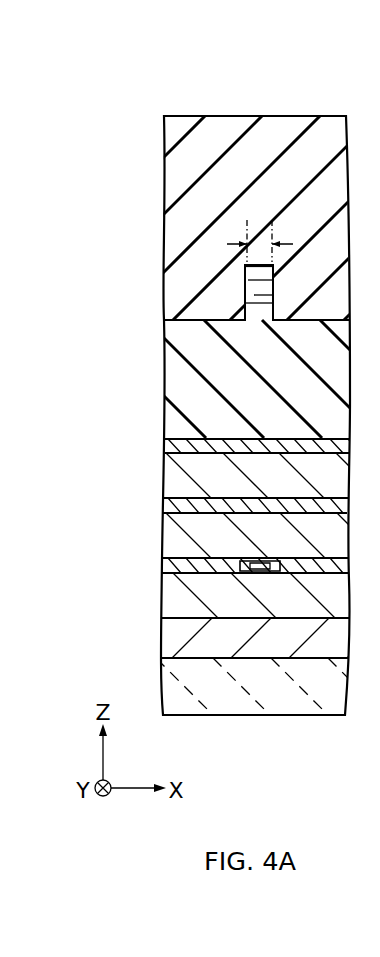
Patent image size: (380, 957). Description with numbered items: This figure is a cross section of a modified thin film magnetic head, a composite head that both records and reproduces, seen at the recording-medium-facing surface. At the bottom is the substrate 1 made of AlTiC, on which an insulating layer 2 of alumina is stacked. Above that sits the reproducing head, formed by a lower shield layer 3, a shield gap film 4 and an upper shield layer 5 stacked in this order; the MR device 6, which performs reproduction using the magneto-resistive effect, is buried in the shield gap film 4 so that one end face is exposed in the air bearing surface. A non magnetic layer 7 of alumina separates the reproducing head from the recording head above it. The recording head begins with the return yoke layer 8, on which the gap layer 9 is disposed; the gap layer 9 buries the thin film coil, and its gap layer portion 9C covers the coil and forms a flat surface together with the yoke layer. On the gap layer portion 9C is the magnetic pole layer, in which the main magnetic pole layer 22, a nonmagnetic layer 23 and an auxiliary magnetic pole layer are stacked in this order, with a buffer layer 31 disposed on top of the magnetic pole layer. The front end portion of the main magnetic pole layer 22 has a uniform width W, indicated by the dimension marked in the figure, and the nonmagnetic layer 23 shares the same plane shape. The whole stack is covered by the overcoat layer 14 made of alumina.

The substrate 1 is at (332, 698).
The insulating layer 2 is at (313, 633).
The lower shield layer 3 is at (290, 600).
The shield gap film 4 is at (232, 573).
The upper shield layer 5 is at (217, 535).
The MR device 6 is at (262, 571).
The non magnetic layer 7 is at (195, 503).
The return yoke layer 8 is at (180, 483).
The gap layer 9 is at (190, 454).
The gap layer portion 9C is at (312, 333).
The overcoat layer 14 is at (333, 127).
The main magnetic pole layer 22 is at (275, 293).
The nonmagnetic layer 23 is at (245, 276).
The buffer layer 31 is at (245, 265).
The width W is at (258, 243).